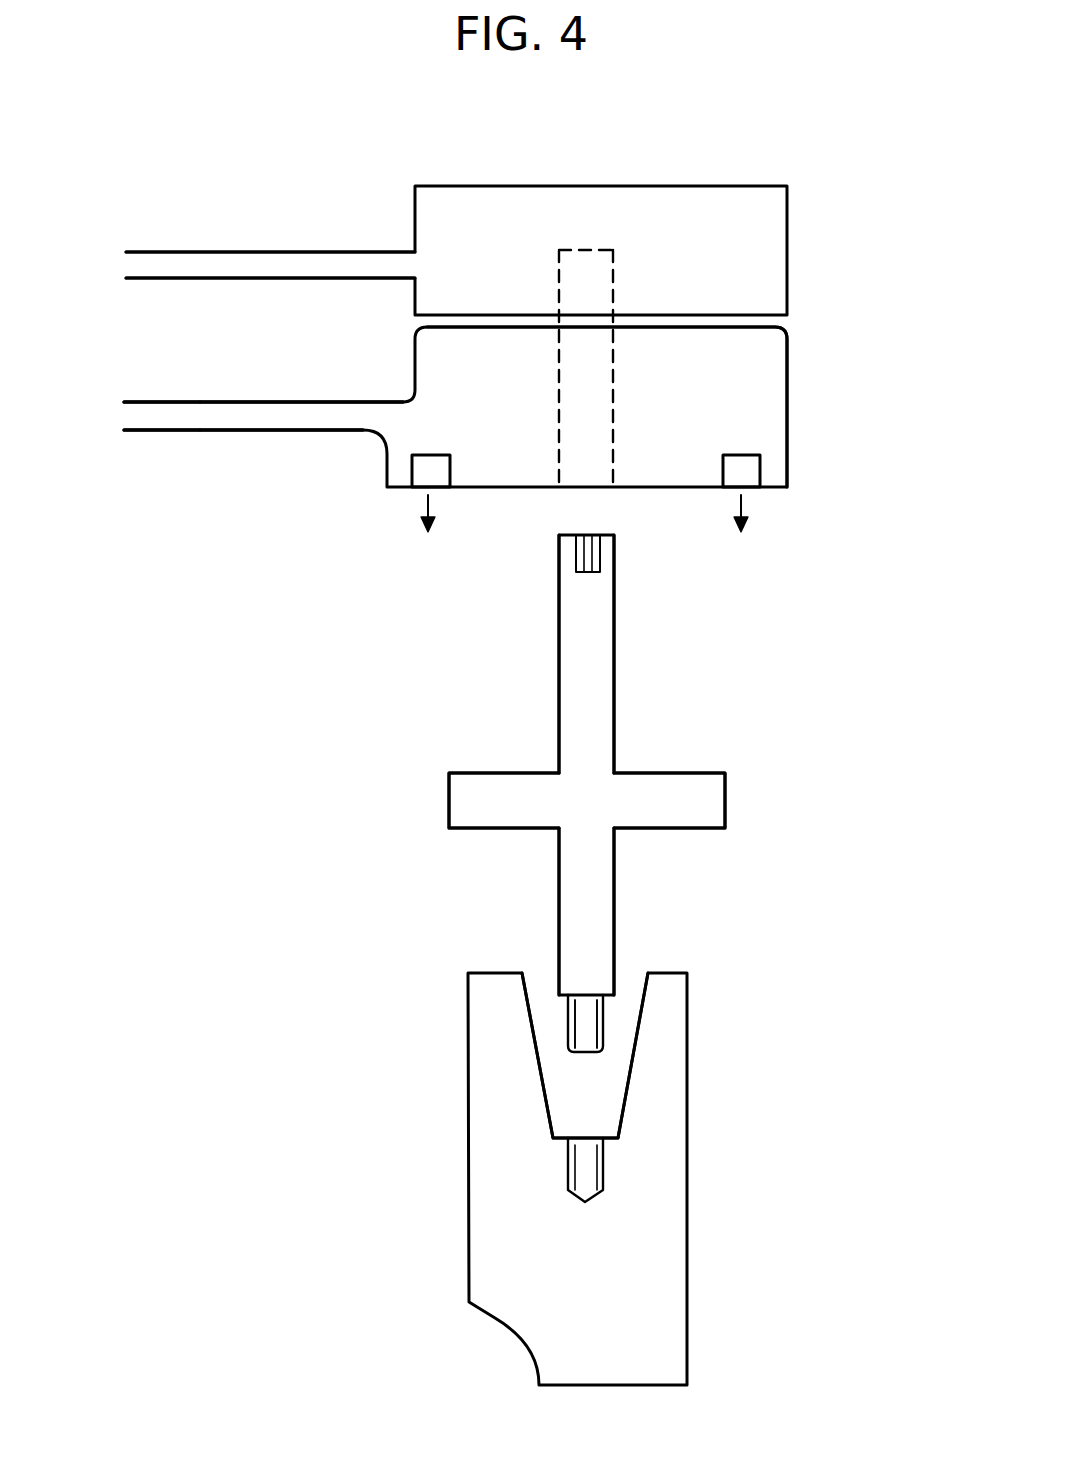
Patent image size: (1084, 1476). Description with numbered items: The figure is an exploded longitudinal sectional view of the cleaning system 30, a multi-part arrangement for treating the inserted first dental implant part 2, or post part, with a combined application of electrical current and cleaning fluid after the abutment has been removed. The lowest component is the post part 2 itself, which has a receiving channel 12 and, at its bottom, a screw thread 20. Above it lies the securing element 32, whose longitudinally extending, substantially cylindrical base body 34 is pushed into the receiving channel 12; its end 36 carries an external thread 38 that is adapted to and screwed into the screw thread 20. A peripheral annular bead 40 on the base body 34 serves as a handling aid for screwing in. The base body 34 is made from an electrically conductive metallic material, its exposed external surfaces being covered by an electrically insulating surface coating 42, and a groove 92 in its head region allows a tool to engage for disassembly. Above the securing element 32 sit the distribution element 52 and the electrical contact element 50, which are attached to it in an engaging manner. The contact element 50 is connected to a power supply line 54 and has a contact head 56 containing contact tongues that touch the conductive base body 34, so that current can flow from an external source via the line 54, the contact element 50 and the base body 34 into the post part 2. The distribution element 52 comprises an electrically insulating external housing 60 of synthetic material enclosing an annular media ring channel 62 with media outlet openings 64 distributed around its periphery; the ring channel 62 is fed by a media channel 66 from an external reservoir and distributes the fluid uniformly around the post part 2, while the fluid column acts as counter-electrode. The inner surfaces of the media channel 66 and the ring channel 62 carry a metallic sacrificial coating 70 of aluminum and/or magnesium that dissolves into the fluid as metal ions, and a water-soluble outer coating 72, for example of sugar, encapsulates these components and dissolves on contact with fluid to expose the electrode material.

The first dental implant part 2 is at (668, 1316).
The receiving channel 12 is at (548, 1032).
The screw thread 20 is at (587, 1182).
The cleaning system 30 is at (310, 756).
The securing element 32 is at (468, 800).
The base body 34 is at (594, 672).
The end 36 is at (605, 998).
The external thread 38 is at (587, 1033).
The annular bead 40 is at (700, 800).
The electrically insulating surface coating 42 is at (559, 668).
The electrical contact element 50 is at (593, 203).
The distribution element 52 is at (766, 345).
The power supply line 54 is at (270, 267).
The contact head 56 is at (493, 203).
The external housing 60 is at (790, 405).
The media ring channel 62 is at (430, 471).
The media outlet openings 64 is at (416, 490).
The media channel 66 is at (268, 415).
The metallic coating 70 is at (160, 433).
The water-soluble outer coating 72 is at (223, 423).
The groove 92 is at (598, 553).